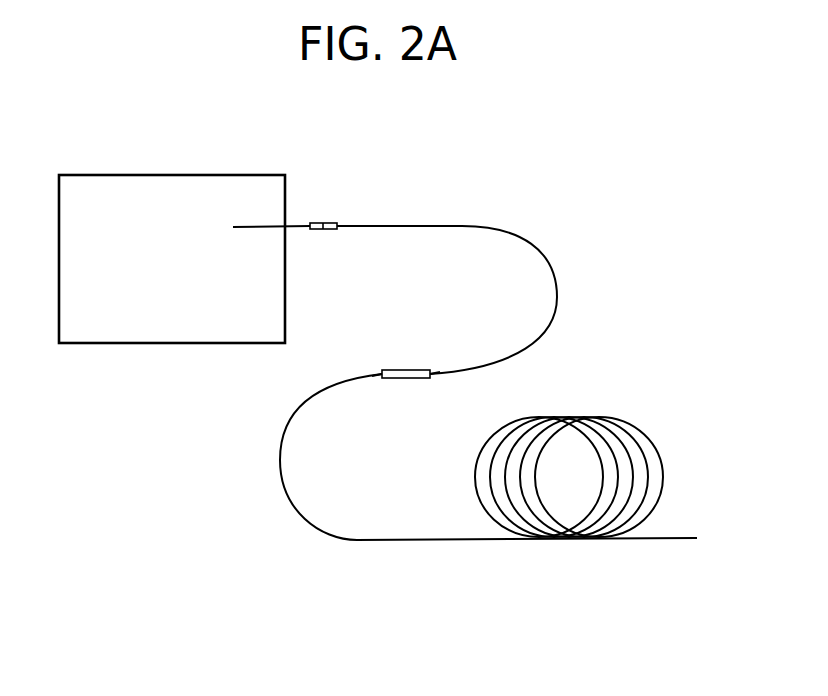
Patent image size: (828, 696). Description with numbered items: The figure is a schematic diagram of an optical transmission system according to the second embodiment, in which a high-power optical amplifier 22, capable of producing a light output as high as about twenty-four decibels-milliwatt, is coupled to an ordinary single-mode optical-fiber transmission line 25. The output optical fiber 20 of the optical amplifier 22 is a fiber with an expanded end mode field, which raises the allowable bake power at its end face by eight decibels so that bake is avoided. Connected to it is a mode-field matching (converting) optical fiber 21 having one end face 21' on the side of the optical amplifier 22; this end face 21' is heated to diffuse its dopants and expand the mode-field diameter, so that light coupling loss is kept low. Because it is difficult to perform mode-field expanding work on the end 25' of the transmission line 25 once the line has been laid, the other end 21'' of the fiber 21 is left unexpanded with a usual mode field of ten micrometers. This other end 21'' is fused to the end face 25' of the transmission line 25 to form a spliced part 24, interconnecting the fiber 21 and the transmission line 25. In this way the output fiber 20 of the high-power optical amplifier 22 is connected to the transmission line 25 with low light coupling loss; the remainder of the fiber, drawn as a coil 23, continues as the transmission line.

The output optical fiber 20 is at (288, 229).
The mode-field matching optical fiber 21 is at (447, 265).
The end face of matching optical fiber 21' is at (349, 213).
The other end of converting optical fiber 21'' is at (452, 345).
The optical amplifier 22 is at (202, 175).
The coiled optical fiber 23 is at (448, 378).
The spliced part 24 is at (395, 378).
The single-mode optical-fiber transmission line 25 is at (455, 457).
The end of transmission line 25' is at (362, 347).